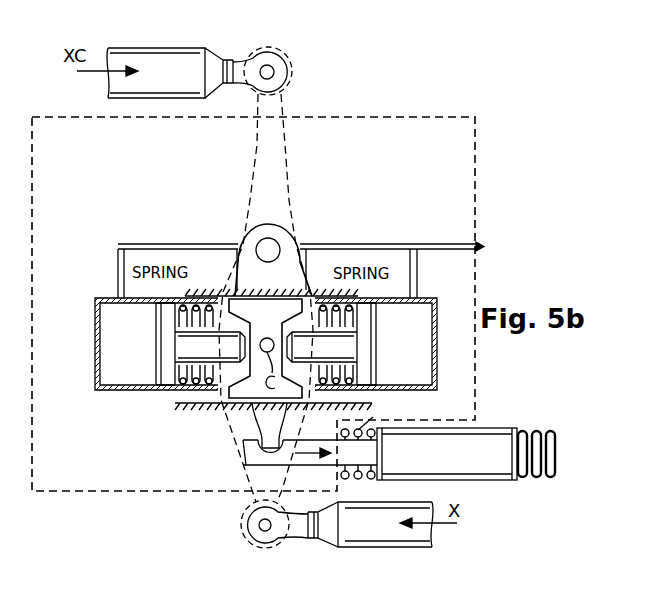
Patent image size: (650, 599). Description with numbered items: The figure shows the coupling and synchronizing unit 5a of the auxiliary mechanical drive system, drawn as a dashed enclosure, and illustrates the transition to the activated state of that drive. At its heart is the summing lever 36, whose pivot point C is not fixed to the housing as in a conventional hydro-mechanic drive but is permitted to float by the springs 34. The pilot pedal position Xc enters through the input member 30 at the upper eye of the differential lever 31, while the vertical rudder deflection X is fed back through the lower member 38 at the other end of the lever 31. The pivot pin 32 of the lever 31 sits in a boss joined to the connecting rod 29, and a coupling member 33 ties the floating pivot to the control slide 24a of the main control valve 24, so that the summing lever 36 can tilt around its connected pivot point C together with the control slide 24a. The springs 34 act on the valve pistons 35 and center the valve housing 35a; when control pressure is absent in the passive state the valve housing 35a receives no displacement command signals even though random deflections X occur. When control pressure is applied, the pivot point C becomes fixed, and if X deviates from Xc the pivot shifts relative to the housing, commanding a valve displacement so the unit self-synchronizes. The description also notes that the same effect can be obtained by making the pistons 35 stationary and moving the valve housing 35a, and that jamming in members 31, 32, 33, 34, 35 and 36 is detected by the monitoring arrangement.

The coupling and synchronizing unit 5a is at (482, 178).
The main control valve 24 is at (480, 441).
The control slide 24a is at (290, 452).
The link 29 is at (444, 246).
The pedal input member 30 is at (180, 58).
The differential lever 31 is at (288, 149).
The pivot pin 32 is at (271, 247).
The coupling member 33 is at (236, 423).
The springs 34 is at (360, 379).
The valve pistons 35 is at (368, 333).
The valve housing 35a is at (420, 351).
The summing lever 36 is at (240, 247).
The rudder feedback member 38 is at (406, 541).